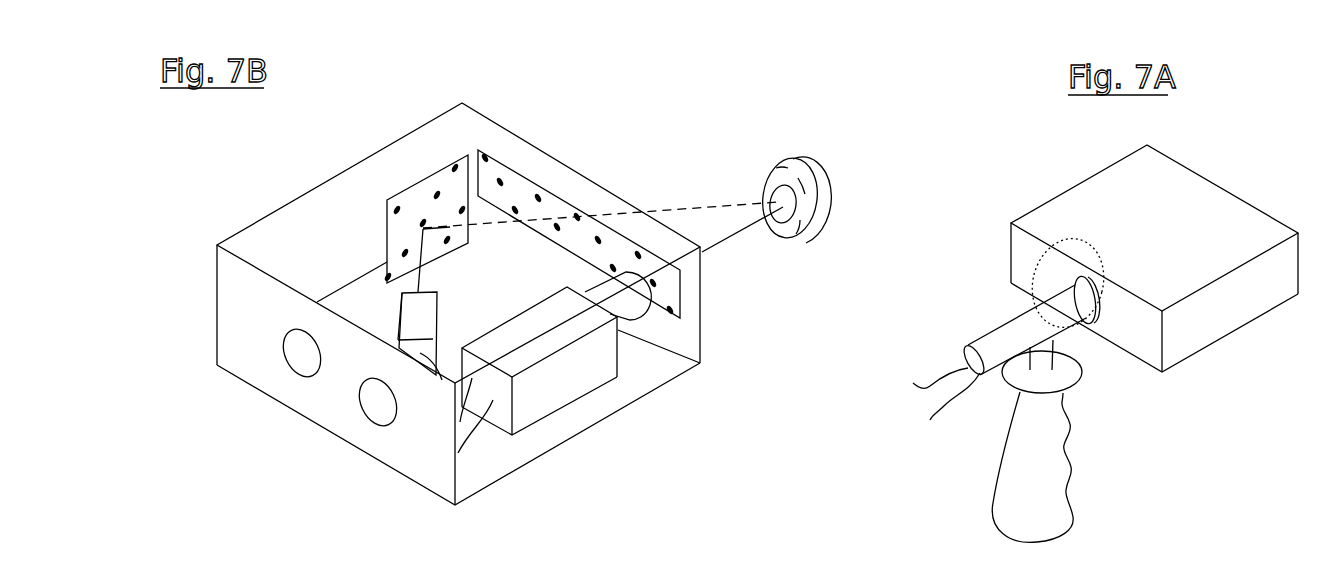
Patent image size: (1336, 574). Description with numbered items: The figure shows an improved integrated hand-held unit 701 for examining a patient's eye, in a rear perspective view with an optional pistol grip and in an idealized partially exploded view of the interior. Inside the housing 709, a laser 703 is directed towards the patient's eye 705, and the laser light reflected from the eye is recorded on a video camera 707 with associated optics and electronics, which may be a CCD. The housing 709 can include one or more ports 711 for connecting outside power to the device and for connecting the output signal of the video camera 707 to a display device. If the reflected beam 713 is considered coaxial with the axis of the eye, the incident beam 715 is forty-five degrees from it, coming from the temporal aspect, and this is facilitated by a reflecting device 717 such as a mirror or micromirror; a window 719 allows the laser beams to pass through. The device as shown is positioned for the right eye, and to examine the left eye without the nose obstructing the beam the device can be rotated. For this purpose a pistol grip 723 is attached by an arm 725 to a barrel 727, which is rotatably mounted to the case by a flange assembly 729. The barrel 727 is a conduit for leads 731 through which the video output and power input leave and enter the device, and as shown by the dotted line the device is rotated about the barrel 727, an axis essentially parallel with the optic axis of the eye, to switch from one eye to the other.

In FIG. 7B, the integrated hand-held unit 701 is at (423, 105).
In FIG. 7A, the integrated hand-held unit 701 is at (1225, 167).
In FIG. 7B, the laser 703 is at (398, 318).
In FIG. 7B, the patient's eye 705 is at (803, 153).
In FIG. 7B, the video camera 707 is at (566, 410).
In FIG. 7B, the housing 709 is at (260, 317).
In FIG. 7A, the housing 709 is at (1225, 325).
In FIG. 7B, the ports 711 is at (358, 400).
In FIG. 7B, the reflected beam 713 is at (727, 247).
In FIG. 7B, the incident beam 715 is at (677, 207).
In FIG. 7B, the reflecting device 717 is at (437, 170).
In FIG. 7B, the window 719 is at (503, 162).
In FIG. 7A, the pistol grip 723 is at (1033, 497).
In FIG. 7A, the arm 725 is at (1033, 365).
In FIG. 7A, the barrel 727 is at (1000, 332).
In FIG. 7A, the flange assembly 729 is at (1088, 325).
In FIG. 7A, the leads 731 is at (928, 407).